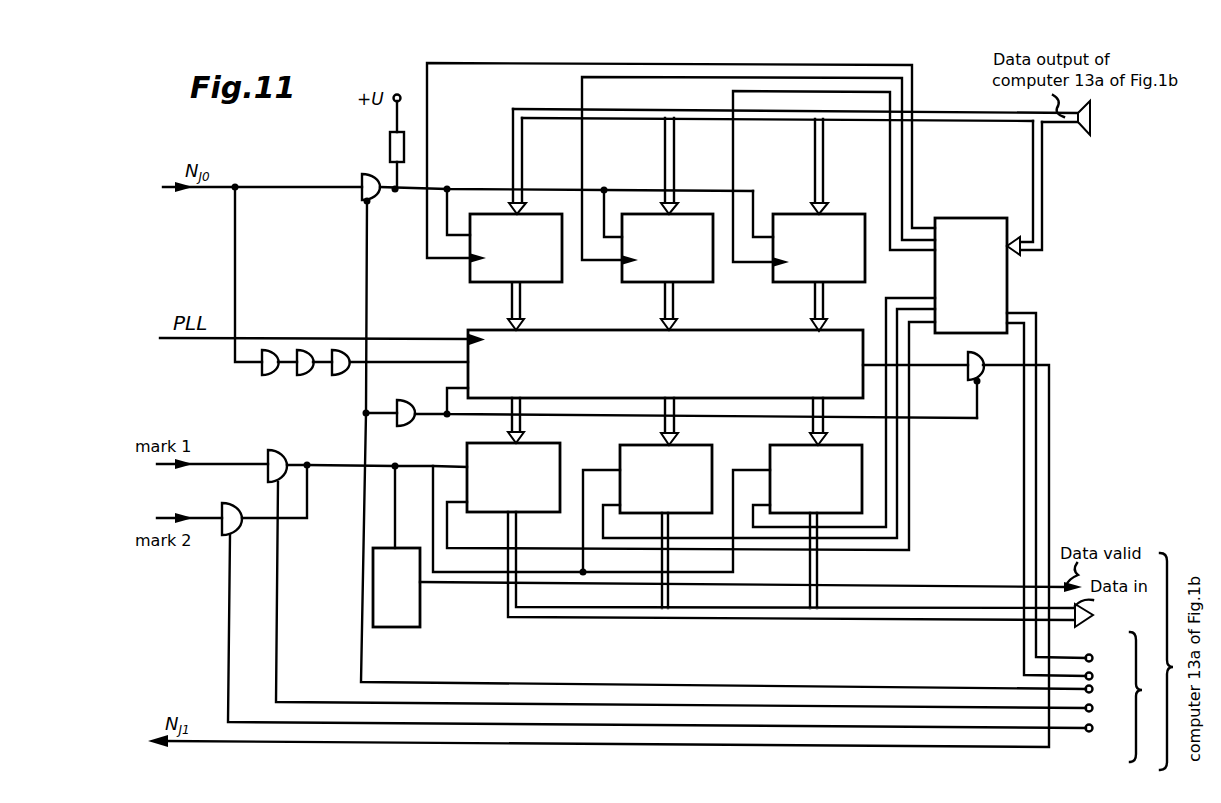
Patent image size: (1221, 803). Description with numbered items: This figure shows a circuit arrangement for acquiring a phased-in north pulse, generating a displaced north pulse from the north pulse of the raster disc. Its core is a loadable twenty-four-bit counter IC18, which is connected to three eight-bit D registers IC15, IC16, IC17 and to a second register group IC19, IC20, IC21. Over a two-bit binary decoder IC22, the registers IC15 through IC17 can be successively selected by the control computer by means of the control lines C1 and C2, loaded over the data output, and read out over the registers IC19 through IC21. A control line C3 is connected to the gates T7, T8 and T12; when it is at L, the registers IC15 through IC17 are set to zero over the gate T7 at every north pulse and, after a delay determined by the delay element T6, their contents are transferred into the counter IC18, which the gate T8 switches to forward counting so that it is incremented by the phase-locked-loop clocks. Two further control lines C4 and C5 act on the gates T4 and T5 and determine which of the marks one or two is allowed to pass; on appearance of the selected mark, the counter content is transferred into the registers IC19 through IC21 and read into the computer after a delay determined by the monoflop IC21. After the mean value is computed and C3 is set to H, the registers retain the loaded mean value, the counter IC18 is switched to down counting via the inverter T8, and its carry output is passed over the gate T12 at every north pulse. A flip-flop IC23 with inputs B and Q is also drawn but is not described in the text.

The gate T4 is at (270, 456).
The gate T5 is at (226, 510).
The delay element T6 is at (355, 382).
The gate T7 is at (360, 200).
The gate T8 is at (410, 424).
The gate T12 is at (970, 369).
The 8-bit D register IC15 is at (516, 248).
The 8-bit D register IC16 is at (667, 248).
The 8-bit D register IC17 is at (819, 248).
The loadable 24-bit counter IC18 is at (665, 364).
The register IC19 is at (513, 477).
The register IC20 is at (666, 479).
The register IC21 is at (816, 479).
The 2-bit binary decoder IC22 is at (971, 275).
The flip-flop IC23 is at (396, 587).
The control line C1 is at (1085, 653).
The control line C2 is at (1085, 672).
The control line C3 is at (1092, 688).
The control line C4 is at (1092, 706).
The control line C5 is at (1086, 732).